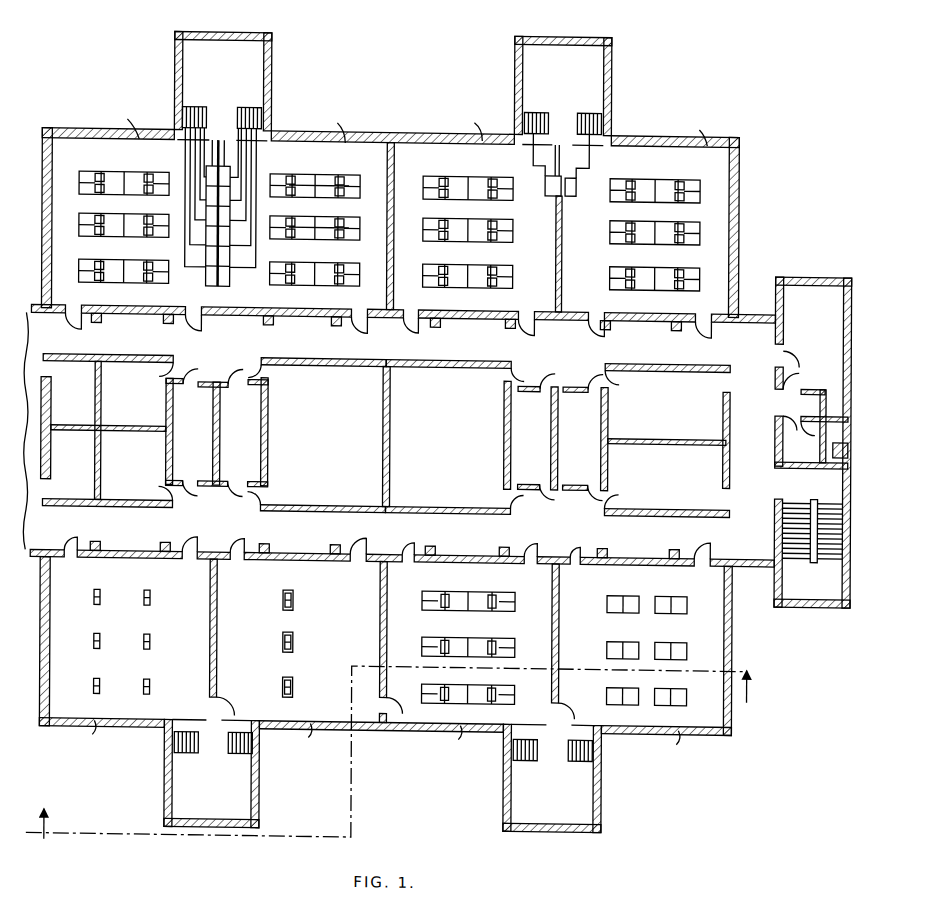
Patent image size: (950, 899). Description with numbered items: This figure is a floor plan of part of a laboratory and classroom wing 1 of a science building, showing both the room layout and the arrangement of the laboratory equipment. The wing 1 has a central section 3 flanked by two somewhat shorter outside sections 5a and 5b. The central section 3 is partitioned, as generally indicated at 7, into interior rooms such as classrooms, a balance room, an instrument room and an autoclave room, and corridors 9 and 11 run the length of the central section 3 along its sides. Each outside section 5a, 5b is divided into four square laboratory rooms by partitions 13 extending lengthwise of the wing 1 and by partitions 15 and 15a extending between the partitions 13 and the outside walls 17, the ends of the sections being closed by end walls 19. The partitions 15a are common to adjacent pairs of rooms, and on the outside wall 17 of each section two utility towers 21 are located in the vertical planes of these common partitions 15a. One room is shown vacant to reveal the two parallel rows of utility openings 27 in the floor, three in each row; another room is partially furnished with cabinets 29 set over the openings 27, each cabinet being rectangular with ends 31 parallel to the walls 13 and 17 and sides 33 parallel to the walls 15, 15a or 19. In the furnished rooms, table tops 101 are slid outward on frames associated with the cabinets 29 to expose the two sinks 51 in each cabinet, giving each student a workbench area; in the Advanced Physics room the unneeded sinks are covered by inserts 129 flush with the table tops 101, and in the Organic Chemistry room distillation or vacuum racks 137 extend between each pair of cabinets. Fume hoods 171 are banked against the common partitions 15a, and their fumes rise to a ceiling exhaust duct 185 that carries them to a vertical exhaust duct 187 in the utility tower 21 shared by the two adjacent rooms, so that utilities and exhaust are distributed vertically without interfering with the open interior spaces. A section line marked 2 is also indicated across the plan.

The laboratory and classroom wing 1 is at (772, 200).
The central section 3 is at (748, 558).
The outside section 5a is at (739, 729).
The outside section 5b is at (742, 131).
The partitioning of central section 7 is at (715, 354).
The corridor 9 is at (384, 534).
The corridor 11 is at (381, 344).
The partitions 13 is at (154, 312).
The partitions 15 is at (387, 248).
The common partitions 15a is at (557, 248).
The outside walls 17 is at (415, 127).
The end walls 19 is at (44, 127).
The utility towers 21 is at (175, 46).
The utility openings 27 is at (103, 595).
The cabinets 29 is at (90, 197).
The cabinet ends 31 is at (294, 588).
The cabinet sides 33 is at (296, 606).
The sinks 51 is at (133, 194).
The table tops 101 is at (140, 172).
The insert 129 is at (444, 280).
The distillation or vacuum rack 137 is at (320, 188).
The fume hoods 171 is at (204, 283).
The exhaust duct 185 is at (187, 154).
The vertical exhaust duct 187 is at (249, 106).
The section line 2- 2 is at (396, 770).